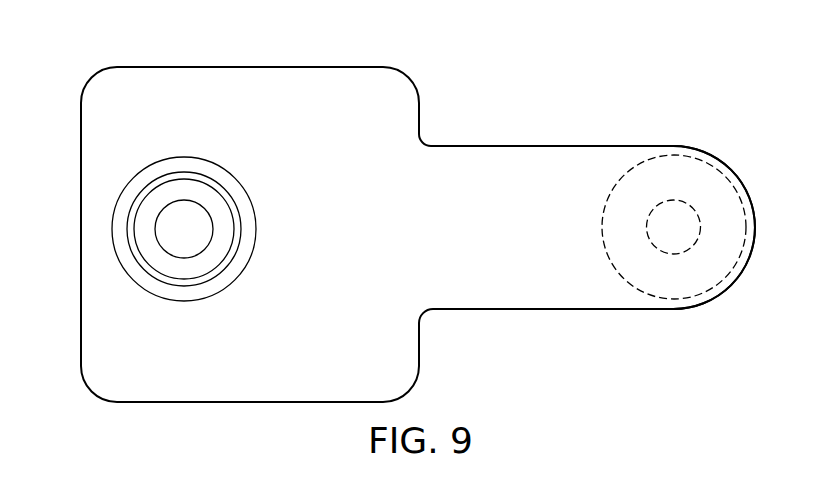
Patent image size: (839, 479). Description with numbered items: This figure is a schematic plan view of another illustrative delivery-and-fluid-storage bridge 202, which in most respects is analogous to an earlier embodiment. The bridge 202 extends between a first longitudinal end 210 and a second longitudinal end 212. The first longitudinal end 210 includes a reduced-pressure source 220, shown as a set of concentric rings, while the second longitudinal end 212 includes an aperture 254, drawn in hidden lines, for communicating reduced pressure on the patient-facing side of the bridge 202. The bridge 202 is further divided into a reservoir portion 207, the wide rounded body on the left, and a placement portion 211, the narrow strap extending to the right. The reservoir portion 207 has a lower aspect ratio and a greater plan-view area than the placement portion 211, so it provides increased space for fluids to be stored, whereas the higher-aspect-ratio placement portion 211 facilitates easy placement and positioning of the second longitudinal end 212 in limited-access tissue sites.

The delivery-and-fluid-storage bridge 202 is at (141, 66).
The reservoir portion 207 is at (275, 66).
The first longitudinal end 210 is at (81, 312).
The placement portion 211 is at (580, 146).
The second longitudinal end 212 is at (755, 226).
The reduced-pressure source 220 is at (184, 157).
The aperture 254 is at (647, 218).